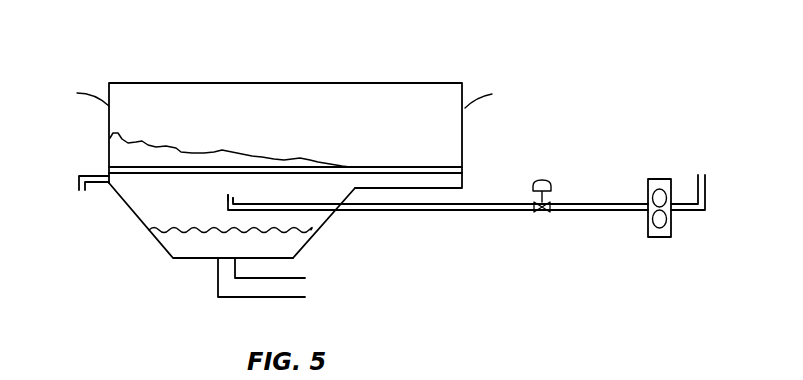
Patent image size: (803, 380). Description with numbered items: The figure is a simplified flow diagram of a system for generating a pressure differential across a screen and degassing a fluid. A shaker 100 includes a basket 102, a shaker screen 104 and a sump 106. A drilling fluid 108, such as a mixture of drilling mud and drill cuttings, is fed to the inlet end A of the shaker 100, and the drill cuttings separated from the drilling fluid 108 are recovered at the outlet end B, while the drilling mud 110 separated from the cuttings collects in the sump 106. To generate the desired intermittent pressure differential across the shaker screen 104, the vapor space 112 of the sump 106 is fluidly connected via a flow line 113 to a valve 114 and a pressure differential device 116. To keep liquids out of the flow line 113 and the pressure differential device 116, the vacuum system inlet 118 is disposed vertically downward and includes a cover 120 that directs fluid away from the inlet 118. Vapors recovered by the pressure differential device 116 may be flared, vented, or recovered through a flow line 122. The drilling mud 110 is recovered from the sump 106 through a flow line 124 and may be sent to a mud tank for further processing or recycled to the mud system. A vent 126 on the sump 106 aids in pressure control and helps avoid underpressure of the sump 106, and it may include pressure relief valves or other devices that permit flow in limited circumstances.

The shaker 100 is at (117, 56).
The basket 102 is at (378, 83).
The shaker screen 104 is at (466, 170).
The sump 106 is at (139, 219).
The drilling fluid 108 is at (119, 148).
The drilling mud 110 is at (296, 241).
The vapor space 112 is at (318, 213).
The flow line 113 is at (436, 213).
The valve 114 is at (545, 178).
The pressure differential device 116 is at (660, 179).
The vacuum system inlet 118 is at (225, 200).
The cover 120 is at (226, 193).
The flow line 122 is at (686, 212).
The flow line 124 is at (240, 298).
The vent 126 is at (95, 175).